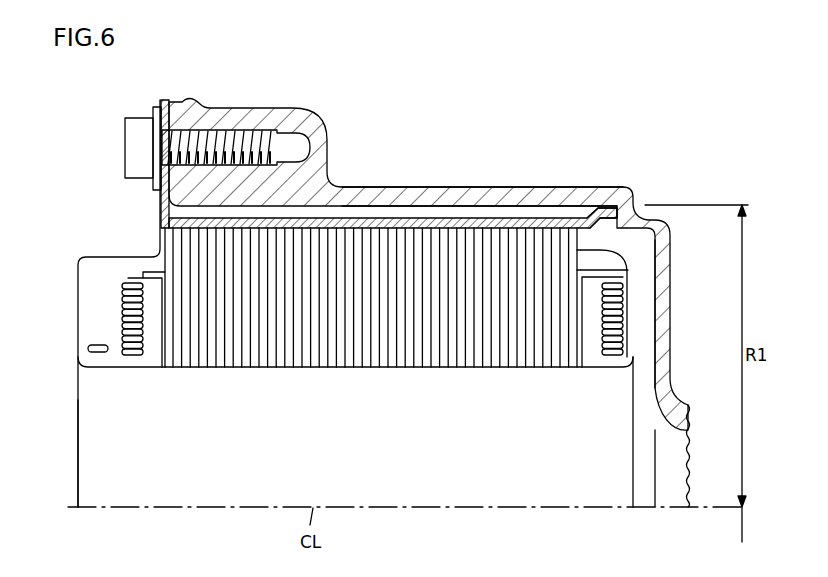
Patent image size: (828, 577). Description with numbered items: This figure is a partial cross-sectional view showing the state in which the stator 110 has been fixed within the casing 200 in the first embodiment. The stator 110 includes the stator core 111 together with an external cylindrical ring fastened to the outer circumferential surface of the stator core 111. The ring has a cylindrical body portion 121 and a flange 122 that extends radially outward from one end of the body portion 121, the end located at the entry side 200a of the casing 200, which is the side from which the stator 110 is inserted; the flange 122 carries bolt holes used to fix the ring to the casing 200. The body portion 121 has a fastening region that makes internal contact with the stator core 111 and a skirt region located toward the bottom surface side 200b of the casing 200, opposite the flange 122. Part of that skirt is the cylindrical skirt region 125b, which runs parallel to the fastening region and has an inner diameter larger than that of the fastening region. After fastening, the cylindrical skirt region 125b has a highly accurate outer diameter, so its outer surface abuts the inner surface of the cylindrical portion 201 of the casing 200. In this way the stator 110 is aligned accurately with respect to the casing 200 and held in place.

The stator 110 is at (109, 238).
The stator core 111 is at (385, 367).
The body portion 121 is at (400, 222).
The flange 122 is at (165, 207).
The cylindrical skirt region 125b is at (605, 210).
The casing 200 is at (303, 120).
The entry side 200a is at (160, 437).
The bottom surface side 200b is at (652, 305).
The cylindrical portion 201 is at (470, 196).